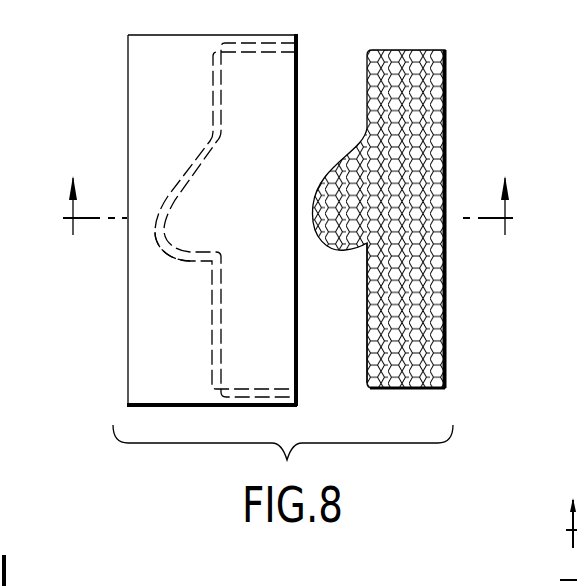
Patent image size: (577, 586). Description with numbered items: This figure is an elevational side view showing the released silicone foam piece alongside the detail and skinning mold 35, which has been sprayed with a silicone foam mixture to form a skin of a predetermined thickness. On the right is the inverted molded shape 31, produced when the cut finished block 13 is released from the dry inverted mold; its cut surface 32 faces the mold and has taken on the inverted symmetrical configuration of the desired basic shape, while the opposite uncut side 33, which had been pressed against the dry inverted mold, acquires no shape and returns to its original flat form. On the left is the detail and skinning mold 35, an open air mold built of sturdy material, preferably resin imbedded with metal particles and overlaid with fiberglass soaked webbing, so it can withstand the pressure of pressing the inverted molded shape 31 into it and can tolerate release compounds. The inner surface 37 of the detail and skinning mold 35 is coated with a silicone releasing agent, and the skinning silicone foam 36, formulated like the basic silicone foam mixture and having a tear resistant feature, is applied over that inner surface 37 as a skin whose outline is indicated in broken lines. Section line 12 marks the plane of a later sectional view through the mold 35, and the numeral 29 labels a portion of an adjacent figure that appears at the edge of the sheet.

The detail and skinning mold 35 is at (128, 71).
The skinning silicone foam 36 is at (297, 43).
The inner surface 37 is at (178, 262).
The inverted molded shape 31 is at (446, 92).
The cut surface 32 is at (367, 334).
The uncut side 33 is at (446, 293).
The section line 12- 12 is at (289, 205).
The adjacent figure element 29 is at (0, 545).
The cut finished block 13 is at (556, 539).